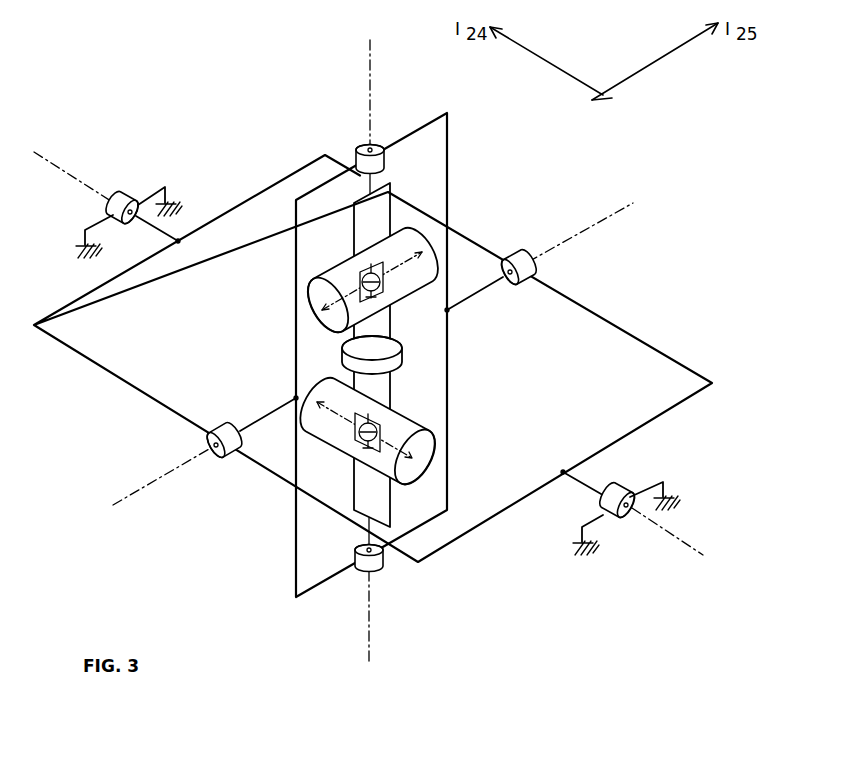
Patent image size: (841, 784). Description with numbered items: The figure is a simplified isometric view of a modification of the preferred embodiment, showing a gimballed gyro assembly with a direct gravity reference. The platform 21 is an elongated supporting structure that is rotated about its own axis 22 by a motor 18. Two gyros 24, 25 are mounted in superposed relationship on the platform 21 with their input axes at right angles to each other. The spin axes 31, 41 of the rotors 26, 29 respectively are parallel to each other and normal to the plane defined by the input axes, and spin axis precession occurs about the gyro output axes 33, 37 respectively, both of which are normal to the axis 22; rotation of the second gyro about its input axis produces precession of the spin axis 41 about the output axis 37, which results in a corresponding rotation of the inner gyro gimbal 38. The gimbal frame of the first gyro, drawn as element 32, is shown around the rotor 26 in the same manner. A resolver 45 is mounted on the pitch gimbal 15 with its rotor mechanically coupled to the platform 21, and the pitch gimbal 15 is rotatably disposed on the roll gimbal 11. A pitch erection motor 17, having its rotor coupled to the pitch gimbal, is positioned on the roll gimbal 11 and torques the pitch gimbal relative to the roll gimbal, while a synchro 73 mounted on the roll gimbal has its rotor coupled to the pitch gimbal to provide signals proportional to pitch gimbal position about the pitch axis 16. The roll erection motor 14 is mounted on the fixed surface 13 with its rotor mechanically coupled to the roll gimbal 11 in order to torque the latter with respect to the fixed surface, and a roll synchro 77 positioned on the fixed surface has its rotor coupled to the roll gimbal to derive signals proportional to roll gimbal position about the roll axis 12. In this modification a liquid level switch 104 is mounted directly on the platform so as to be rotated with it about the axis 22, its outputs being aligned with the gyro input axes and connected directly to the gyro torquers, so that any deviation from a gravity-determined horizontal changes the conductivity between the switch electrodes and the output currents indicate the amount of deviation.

The roll gimbal 11 is at (592, 313).
The roll axis 12 is at (675, 549).
The fixed surface 13 is at (78, 248).
The roll erection motor 14 is at (600, 503).
The pitch gimbal 15 is at (448, 145).
The pitch axis 16 is at (142, 494).
The pitch erection motor 17 is at (513, 256).
The motor 18 is at (378, 562).
The platform 21 is at (354, 236).
The axis 22 is at (369, 62).
The gyro 24 is at (332, 330).
The gyro 25 is at (330, 445).
The rotor 26 is at (384, 280).
The rotor 29 is at (380, 434).
The spin axis 31 is at (374, 297).
The first gimbal frame 32 is at (360, 280).
The gyro output axis 33 is at (405, 260).
The output axis 37 is at (400, 480).
The inner gyro gimbal 38 is at (355, 430).
The spin axis 41 is at (366, 452).
The resolver 45 is at (362, 145).
The synchro 73 is at (218, 460).
The roll synchro 77 is at (128, 198).
The liquid level switch 104 is at (402, 360).